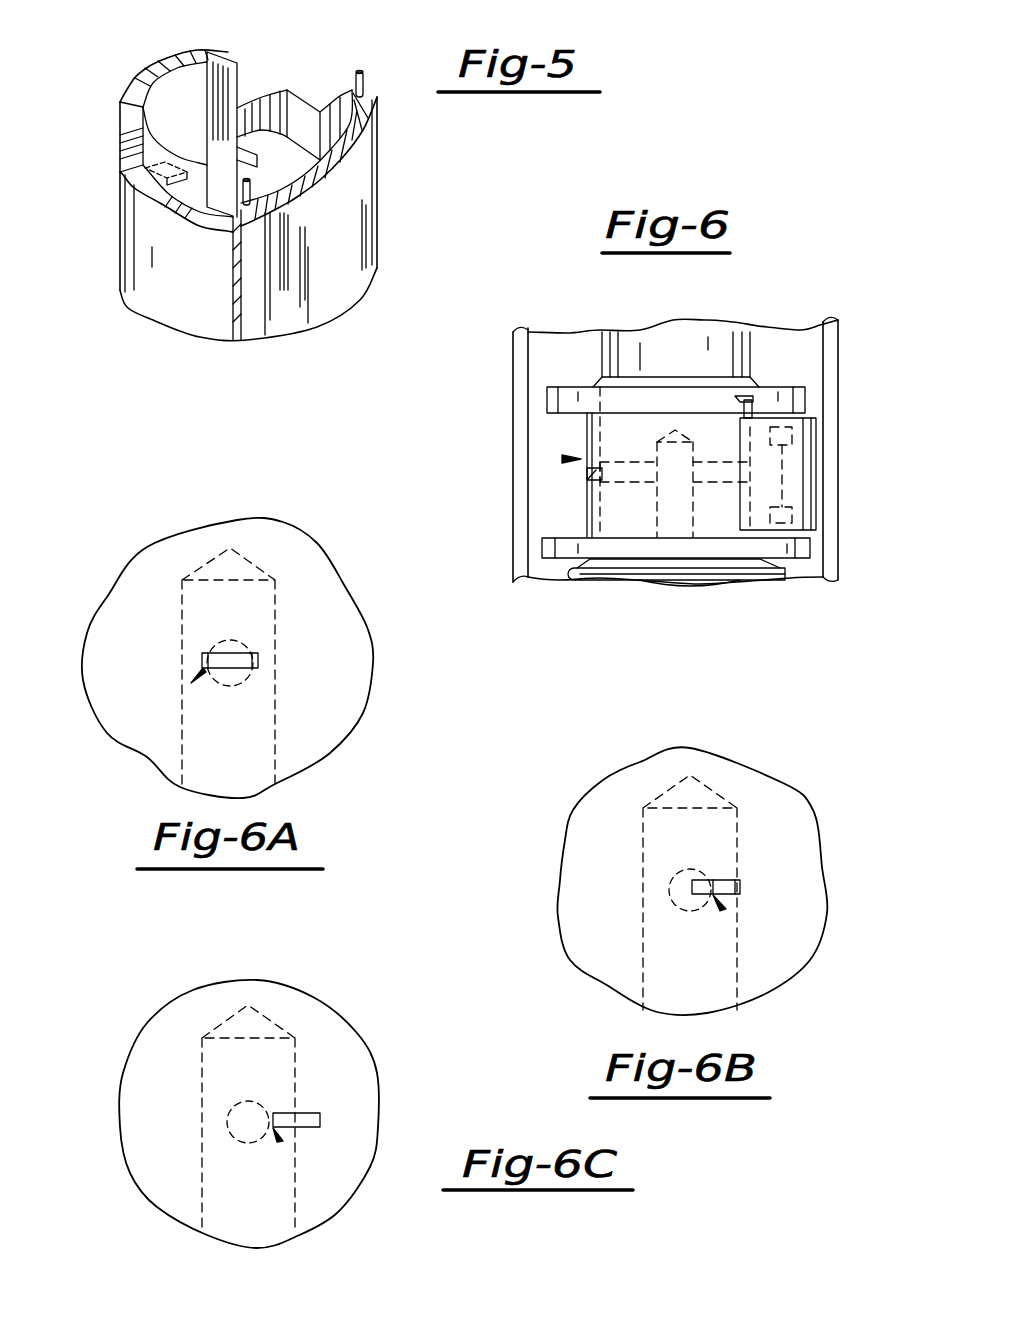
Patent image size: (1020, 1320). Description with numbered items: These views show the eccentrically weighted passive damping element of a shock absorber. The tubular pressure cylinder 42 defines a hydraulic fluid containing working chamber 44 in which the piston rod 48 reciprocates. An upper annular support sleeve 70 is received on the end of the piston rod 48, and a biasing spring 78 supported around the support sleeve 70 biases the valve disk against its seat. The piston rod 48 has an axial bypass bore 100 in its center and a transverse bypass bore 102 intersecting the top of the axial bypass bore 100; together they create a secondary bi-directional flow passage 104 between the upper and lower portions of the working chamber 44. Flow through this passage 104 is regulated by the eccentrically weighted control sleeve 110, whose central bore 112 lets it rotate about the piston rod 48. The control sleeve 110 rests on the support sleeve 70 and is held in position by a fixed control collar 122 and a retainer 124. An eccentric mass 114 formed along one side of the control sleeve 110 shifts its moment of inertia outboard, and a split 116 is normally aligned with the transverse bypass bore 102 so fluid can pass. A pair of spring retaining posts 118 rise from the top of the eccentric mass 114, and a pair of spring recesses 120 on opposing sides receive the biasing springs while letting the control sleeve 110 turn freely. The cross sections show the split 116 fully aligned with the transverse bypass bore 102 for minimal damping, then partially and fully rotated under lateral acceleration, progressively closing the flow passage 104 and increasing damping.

In FIG. 6, the pressure cylinder 42 is at (518, 378).
In FIG. 6, the working chamber 44 is at (543, 528).
In FIG. 6, the piston rod 48 is at (718, 342).
In FIG. 6, the support sleeve 70 is at (787, 547).
In FIG. 6, the biasing spring 78 is at (627, 571).
In FIG. 6, the axial bypass bore 100 is at (660, 452).
In FIG. 6A, the axial bypass bore 100 is at (207, 613).
In FIG. 6B, the axial bypass bore 100 is at (667, 847).
In FIG. 6C, the axial bypass bore 100 is at (215, 1087).
In FIG. 6, the transverse bypass bore 102 is at (615, 482).
In FIG. 6A, the transverse bypass bore 102 is at (233, 650).
In FIG. 6B, the transverse bypass bore 102 is at (695, 873).
In FIG. 6C, the transverse bypass bore 102 is at (248, 1107).
In FIG. 6A, the bi-directional flow passage 104 is at (193, 680).
In FIG. 6B, the bi-directional flow passage 104 is at (720, 903).
In FIG. 6C, the bi-directional flow passage 104 is at (280, 1133).
In FIG. 5, the control sleeve 110 is at (126, 68).
In FIG. 6, the control sleeve 110 is at (562, 459).
In FIG. 6A, the control sleeve 110 is at (315, 675).
In FIG. 6B, the control sleeve 110 is at (593, 895).
In FIG. 6C, the control sleeve 110 is at (147, 1140).
In FIG. 5, the central bore 112 is at (204, 110).
In FIG. 5, the eccentric mass 114 is at (338, 167).
In FIG. 6, the eccentric mass 114 is at (798, 445).
In FIG. 5, the split 116 is at (160, 198).
In FIG. 6, the split 116 is at (600, 477).
In FIG. 6A, the split 116 is at (260, 662).
In FIG. 6B, the split 116 is at (722, 880).
In FIG. 6C, the split 116 is at (313, 1113).
In FIG. 5, the spring retaining posts 118 is at (364, 80).
In FIG. 6, the spring retaining posts 118 is at (755, 407).
In FIG. 5, the spring recesses 120 is at (237, 103).
In FIG. 6, the control collar 122 is at (563, 400).
In FIG. 6, the retainer 124 is at (590, 378).